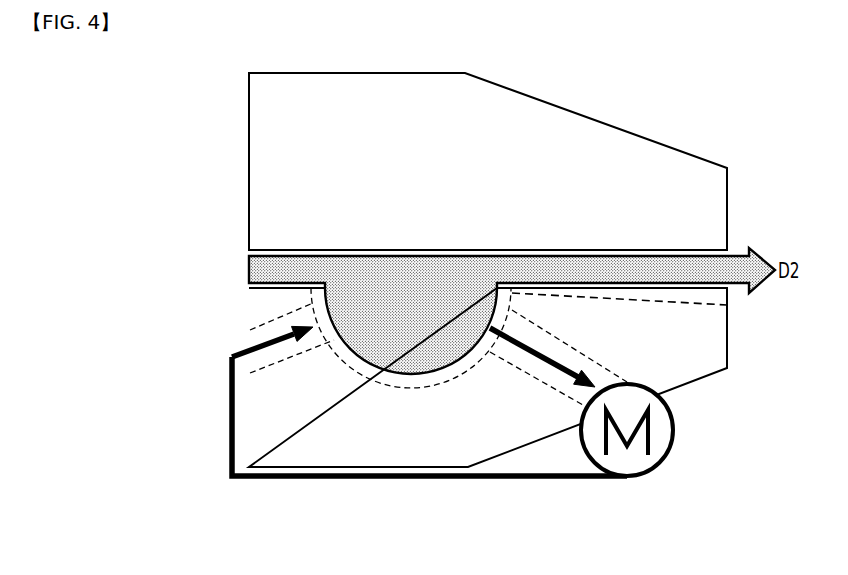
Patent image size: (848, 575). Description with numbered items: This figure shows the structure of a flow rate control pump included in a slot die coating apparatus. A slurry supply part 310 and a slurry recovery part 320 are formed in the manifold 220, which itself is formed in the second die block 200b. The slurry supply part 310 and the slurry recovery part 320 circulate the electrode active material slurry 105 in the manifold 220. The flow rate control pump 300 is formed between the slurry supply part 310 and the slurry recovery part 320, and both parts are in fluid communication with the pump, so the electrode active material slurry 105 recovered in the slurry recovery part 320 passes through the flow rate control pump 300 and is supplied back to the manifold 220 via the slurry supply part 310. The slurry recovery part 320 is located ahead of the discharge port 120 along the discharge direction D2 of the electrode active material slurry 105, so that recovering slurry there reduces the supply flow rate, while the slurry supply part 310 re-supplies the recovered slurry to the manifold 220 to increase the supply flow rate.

The electrode active material slurry 105 is at (680, 266).
The discharge port 120 is at (692, 306).
The second die block 200b is at (540, 440).
The manifold 220 is at (373, 530).
The flow rate control pump 300 is at (727, 438).
The slurry supply part 310 is at (205, 276).
The slurry recovery part 320 is at (683, 100).